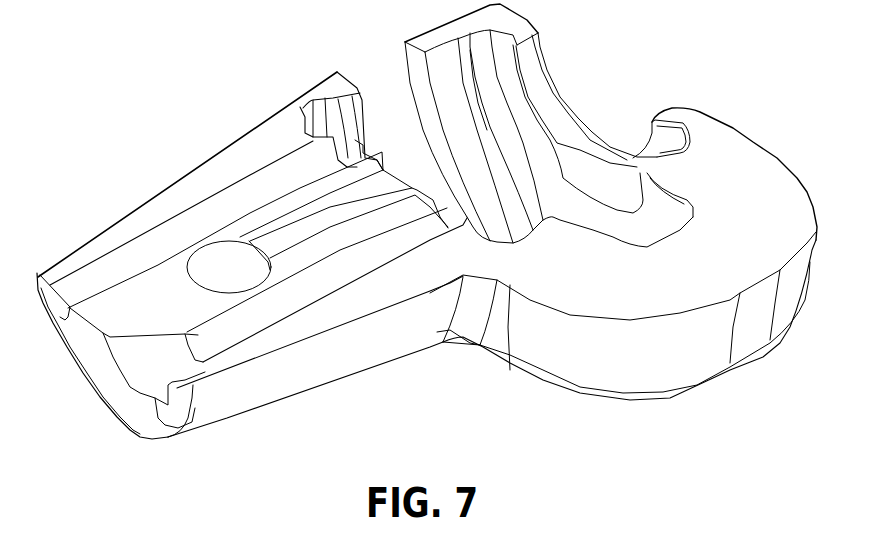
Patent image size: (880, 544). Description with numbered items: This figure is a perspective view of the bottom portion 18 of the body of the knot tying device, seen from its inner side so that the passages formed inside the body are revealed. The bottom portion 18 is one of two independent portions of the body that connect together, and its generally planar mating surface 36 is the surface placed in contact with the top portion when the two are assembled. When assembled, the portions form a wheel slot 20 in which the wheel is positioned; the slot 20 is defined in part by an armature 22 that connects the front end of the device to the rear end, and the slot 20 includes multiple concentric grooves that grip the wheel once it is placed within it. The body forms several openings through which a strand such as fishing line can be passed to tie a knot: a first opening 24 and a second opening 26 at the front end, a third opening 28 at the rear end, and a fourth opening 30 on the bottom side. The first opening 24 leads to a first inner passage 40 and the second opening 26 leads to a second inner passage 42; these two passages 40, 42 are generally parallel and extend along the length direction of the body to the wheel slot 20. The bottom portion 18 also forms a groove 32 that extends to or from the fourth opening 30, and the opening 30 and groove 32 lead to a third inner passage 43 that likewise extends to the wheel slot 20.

The bottom portion 18 is at (92, 84).
The wheel slot 20 is at (360, 52).
The armature 22 is at (770, 358).
The first opening 24 is at (51, 302).
The second opening 26 is at (155, 378).
The third opening 28 is at (612, 84).
The fourth opening 30 is at (193, 267).
The groove 32 is at (288, 230).
The mating surface 36 is at (750, 155).
The first inner passage 40 is at (83, 275).
The second inner passage 42 is at (258, 325).
The third inner passage 43 is at (380, 188).